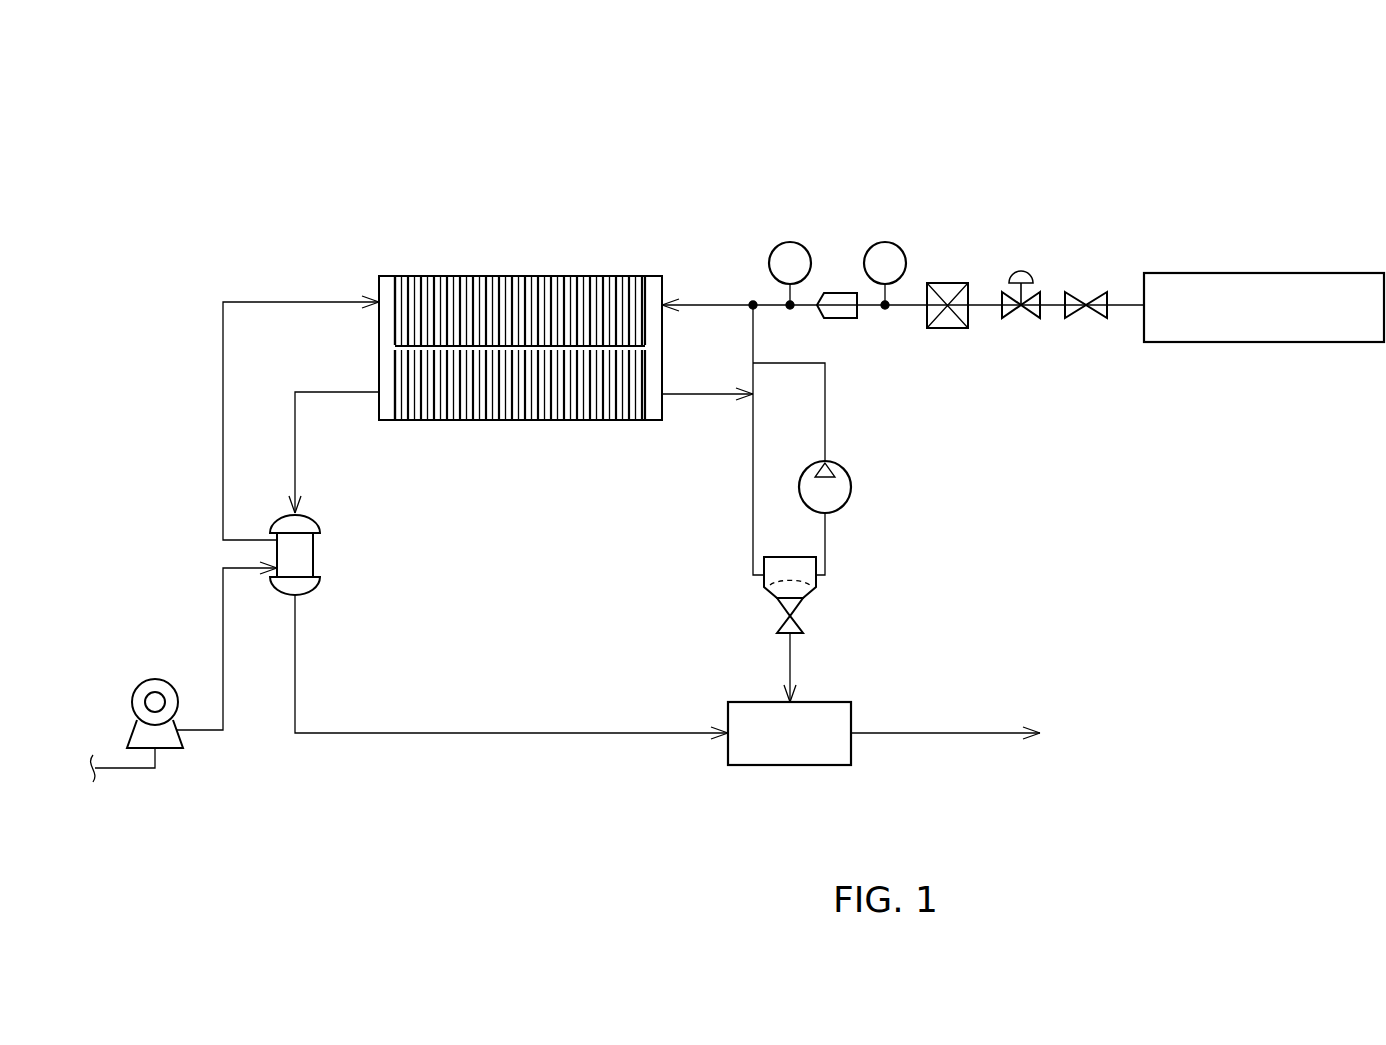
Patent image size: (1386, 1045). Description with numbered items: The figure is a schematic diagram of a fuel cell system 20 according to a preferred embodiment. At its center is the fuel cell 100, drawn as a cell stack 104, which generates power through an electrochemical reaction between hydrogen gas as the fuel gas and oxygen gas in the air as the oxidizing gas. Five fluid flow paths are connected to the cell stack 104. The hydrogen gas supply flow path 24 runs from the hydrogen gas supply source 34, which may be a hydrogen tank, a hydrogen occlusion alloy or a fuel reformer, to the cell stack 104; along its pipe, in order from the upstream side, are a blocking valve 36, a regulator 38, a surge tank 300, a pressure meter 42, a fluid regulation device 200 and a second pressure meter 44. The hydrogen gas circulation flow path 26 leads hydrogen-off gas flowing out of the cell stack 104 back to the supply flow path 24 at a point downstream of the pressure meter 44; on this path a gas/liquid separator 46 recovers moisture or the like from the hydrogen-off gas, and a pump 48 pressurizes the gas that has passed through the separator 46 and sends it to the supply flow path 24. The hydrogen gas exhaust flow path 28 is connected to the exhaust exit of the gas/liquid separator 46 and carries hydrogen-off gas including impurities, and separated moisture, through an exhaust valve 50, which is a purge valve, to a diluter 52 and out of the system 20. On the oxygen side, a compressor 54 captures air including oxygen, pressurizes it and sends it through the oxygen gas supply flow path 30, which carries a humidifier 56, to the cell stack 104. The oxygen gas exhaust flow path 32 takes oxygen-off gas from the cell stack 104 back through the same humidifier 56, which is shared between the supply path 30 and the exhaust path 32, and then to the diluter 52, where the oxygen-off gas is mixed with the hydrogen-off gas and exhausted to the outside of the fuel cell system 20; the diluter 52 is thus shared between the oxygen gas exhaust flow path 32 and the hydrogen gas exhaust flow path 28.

The fuel cell system 20 is at (372, 203).
The fuel cell 100 is at (527, 276).
The cell stack 104 is at (472, 276).
The hydrogen gas supply flow path 24 is at (717, 291).
The hydrogen gas circulation flow path 26 is at (750, 473).
The hydrogen gas exhaust flow path 28 is at (808, 653).
The oxygen gas supply flow path 30 is at (218, 435).
The oxygen gas exhaust flow path 32 is at (300, 445).
The hydrogen gas supply source 34 is at (1285, 342).
The blocking valve 36 is at (1090, 318).
The regulator 38 is at (1020, 318).
The pressure meter 42 is at (893, 245).
The pressure meter 44 is at (778, 246).
The fluid regulation device 200 is at (840, 293).
The surge tank 300 is at (948, 283).
The gas/liquid separator 46 is at (760, 583).
The pump 48 is at (852, 487).
The exhaust valve 50 is at (805, 622).
The diluter 52 is at (740, 700).
The compressor 54 is at (143, 680).
The humidifier 56 is at (323, 555).